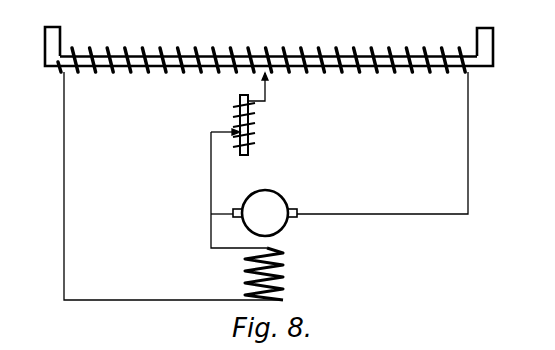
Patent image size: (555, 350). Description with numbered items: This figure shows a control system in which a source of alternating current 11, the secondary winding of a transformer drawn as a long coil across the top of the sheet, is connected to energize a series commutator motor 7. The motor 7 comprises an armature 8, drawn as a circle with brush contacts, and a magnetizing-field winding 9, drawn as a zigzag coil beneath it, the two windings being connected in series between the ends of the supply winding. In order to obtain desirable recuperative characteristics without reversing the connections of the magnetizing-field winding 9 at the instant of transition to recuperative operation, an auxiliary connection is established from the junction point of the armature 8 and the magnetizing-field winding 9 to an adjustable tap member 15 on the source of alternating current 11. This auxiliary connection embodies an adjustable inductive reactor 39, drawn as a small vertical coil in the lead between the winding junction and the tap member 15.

The source of alternating current 11 is at (258, 49).
The adjustable tap member 15 is at (265, 93).
The adjustable inductive reactor 39 is at (254, 118).
The armature 8 is at (262, 208).
The series commutator motor 7 is at (325, 249).
The magnetizing-field winding 9 is at (283, 273).